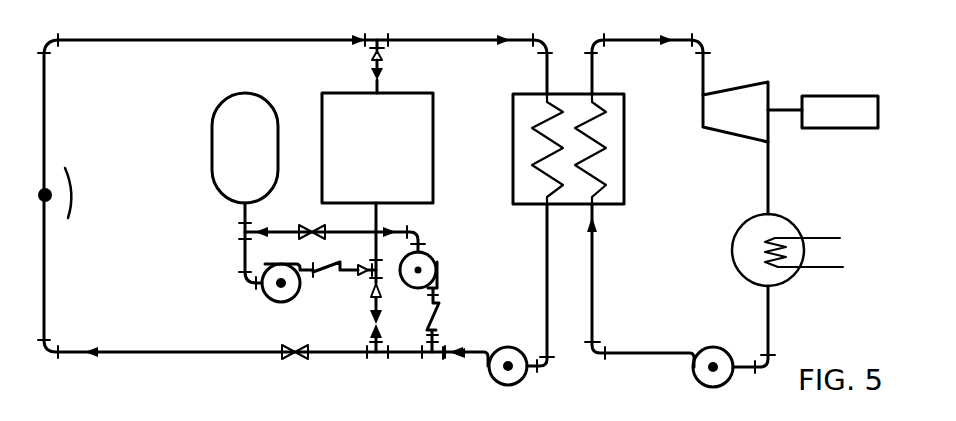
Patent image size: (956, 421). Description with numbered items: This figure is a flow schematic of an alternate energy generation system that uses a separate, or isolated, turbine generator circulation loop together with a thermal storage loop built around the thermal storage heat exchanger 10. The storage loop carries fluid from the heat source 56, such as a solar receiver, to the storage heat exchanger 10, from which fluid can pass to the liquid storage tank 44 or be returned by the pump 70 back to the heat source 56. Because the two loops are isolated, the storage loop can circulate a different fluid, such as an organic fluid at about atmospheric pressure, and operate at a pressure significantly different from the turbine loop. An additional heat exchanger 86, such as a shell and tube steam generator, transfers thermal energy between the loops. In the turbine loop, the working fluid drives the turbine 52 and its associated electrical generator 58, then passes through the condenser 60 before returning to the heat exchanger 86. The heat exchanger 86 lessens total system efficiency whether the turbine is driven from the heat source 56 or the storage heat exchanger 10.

The thermal storage heat exchanger 10 is at (433, 163).
The liquid storage tank 44 is at (212, 152).
The turbine 52 is at (728, 91).
The heat source 56 is at (58, 192).
The electrical generator 58 is at (846, 96).
The condenser 60 is at (742, 226).
The pump 70 is at (437, 262).
The heat exchanger 86 is at (624, 162).